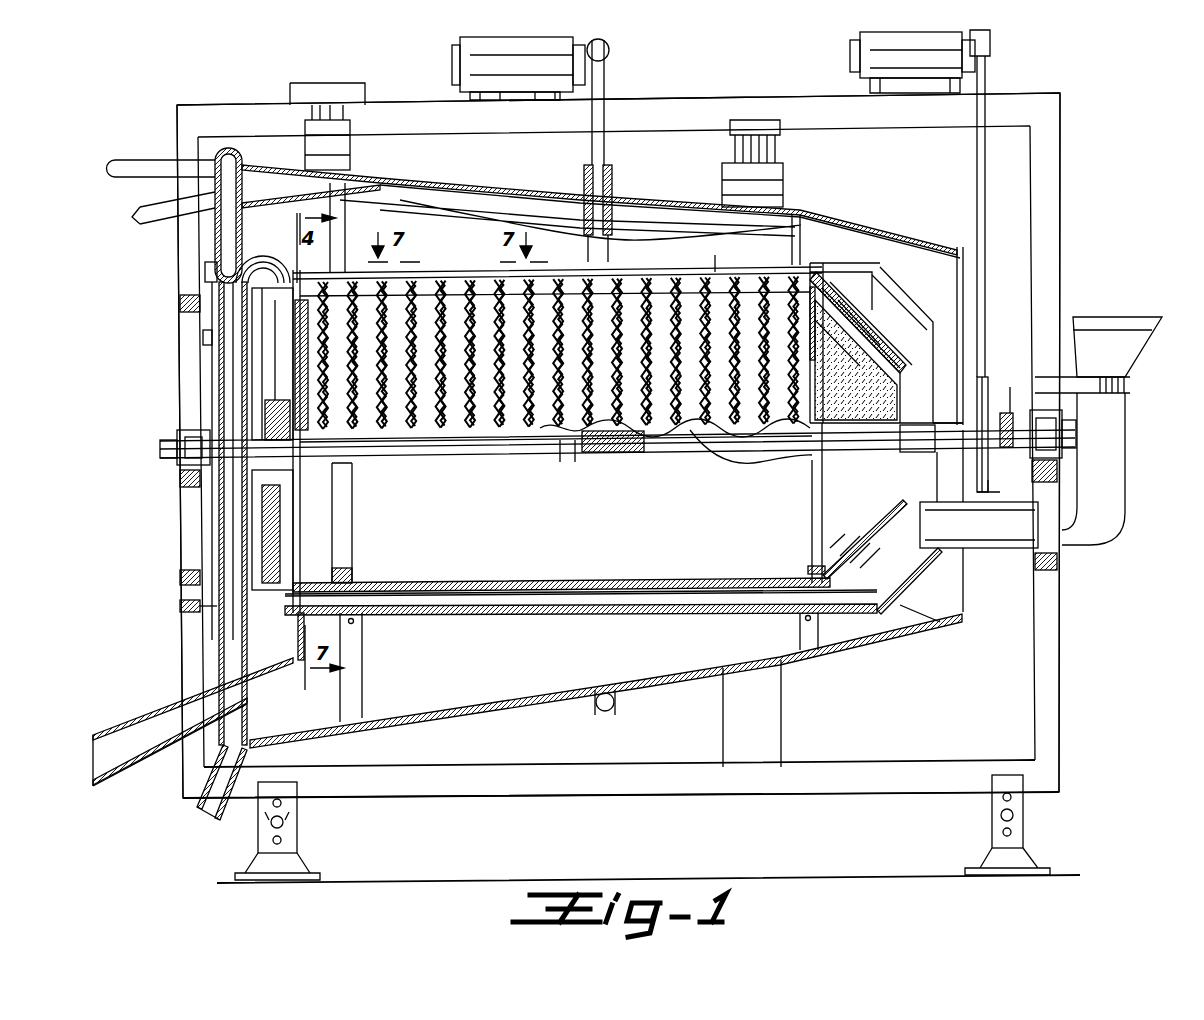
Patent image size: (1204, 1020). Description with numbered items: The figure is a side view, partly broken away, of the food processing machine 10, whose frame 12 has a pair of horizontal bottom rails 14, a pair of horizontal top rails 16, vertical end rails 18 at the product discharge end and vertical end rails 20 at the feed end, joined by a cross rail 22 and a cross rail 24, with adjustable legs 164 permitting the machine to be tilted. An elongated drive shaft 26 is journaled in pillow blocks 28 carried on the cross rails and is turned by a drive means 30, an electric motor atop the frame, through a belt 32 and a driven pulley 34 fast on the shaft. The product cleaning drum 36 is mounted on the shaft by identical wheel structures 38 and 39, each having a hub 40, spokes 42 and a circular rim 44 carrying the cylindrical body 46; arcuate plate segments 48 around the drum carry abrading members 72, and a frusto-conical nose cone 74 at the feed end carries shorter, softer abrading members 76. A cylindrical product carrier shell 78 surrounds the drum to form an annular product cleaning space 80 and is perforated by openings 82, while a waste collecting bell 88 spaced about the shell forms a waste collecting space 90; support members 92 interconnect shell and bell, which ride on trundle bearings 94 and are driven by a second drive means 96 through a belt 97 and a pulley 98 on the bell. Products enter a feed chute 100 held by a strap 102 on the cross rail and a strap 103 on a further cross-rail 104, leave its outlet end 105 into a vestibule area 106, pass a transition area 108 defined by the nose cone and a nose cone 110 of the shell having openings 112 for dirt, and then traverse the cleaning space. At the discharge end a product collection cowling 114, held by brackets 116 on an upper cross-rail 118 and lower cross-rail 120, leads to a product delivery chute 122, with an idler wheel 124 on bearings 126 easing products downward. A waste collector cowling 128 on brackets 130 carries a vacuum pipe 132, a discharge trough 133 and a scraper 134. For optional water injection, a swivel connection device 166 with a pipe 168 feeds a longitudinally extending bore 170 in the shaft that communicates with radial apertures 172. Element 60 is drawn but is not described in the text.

The food processing machine 10 is at (1078, 160).
The frame 12 is at (635, 470).
The horizontal bottom rails 14 is at (626, 799).
The horizontal top rails 16 is at (1012, 94).
The vertical end rails 18 is at (190, 366).
The vertical end rails 20 is at (1060, 584).
The cross rail 22 is at (180, 479).
The cross rail 24 is at (1058, 473).
The drive shaft 26 is at (160, 450).
The pillow blocks 28 is at (178, 433).
The drive means 30 is at (858, 52).
The belt 32 is at (975, 152).
The driven pulley 34 is at (990, 486).
The product cleaning drum 36 is at (778, 273).
The wheel structure 38 is at (352, 511).
The wheel structure 39 is at (800, 488).
The hub 40 is at (395, 460).
The spokes 42 is at (352, 539).
The circular rim 44 is at (352, 576).
The cylindrical body 46 is at (826, 277).
The arcuate plate segments 48 is at (612, 176).
The divider 60 is at (710, 253).
The abrading members 72 is at (558, 272).
The frusto-conical nose cone 74 is at (895, 346).
The abrading members 76 is at (860, 301).
The product carrier shell 78 is at (855, 240).
The annular product cleaning space 80 is at (560, 613).
The openings 82 is at (520, 615).
The waste collecting bell 88 is at (523, 186).
The waste collecting space 90 is at (433, 243).
The support members 92 is at (347, 212).
The trundle bearings 94 is at (355, 152).
The second drive means 96 is at (456, 60).
The belt 97 is at (612, 96).
The pulley 98 is at (595, 705).
The feed chute 100 is at (1140, 336).
The strap 102 is at (1130, 386).
The strap 103 is at (1120, 540).
The cross-rail 104 is at (1060, 571).
The outlet end 105 is at (965, 556).
The vestibule area 106 is at (900, 479).
The transition area 108 is at (884, 336).
The nose cone 110 is at (906, 250).
The openings 112 is at (912, 292).
The product collection cowling 114 is at (210, 338).
The brackets 116 is at (212, 320).
The upper cross-rail 118 is at (180, 304).
The lower cross-rail 120 is at (180, 579).
The product delivery chute 122 is at (104, 733).
The idler wheel 124 is at (262, 506).
The bearings 126 is at (262, 406).
The waste collector cowling 128 is at (230, 148).
The brackets 130 is at (215, 272).
The pipe 132 is at (142, 158).
The discharge trough 133 is at (200, 806).
The scraper 134 is at (292, 206).
The adjustable legs 164 is at (258, 841).
The swivel connection device 166 is at (1010, 443).
The pipe 168 is at (1010, 385).
The longitudinally extending bore 170 is at (598, 460).
The radial apertures 172 is at (540, 458).